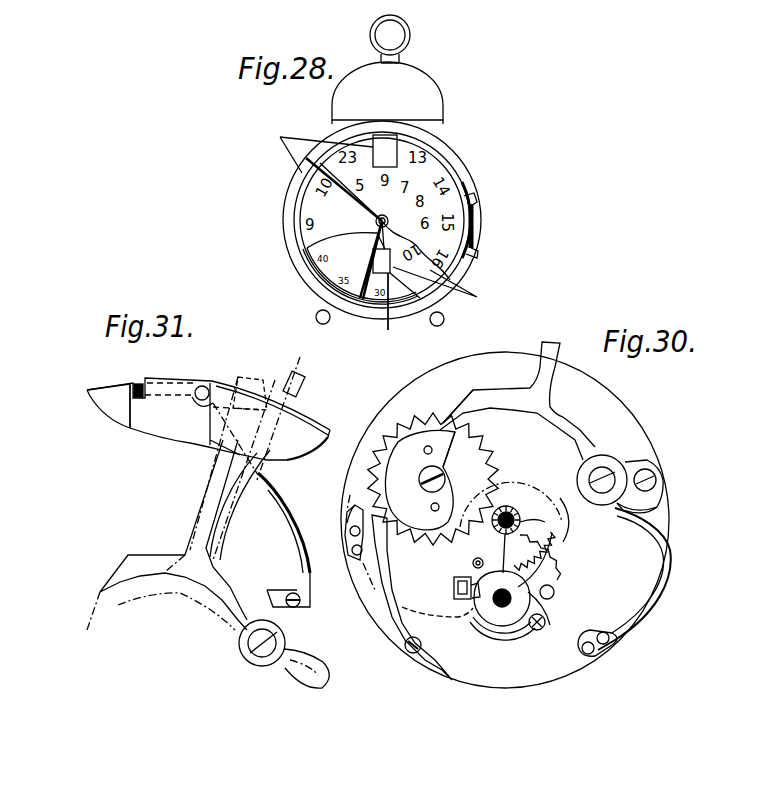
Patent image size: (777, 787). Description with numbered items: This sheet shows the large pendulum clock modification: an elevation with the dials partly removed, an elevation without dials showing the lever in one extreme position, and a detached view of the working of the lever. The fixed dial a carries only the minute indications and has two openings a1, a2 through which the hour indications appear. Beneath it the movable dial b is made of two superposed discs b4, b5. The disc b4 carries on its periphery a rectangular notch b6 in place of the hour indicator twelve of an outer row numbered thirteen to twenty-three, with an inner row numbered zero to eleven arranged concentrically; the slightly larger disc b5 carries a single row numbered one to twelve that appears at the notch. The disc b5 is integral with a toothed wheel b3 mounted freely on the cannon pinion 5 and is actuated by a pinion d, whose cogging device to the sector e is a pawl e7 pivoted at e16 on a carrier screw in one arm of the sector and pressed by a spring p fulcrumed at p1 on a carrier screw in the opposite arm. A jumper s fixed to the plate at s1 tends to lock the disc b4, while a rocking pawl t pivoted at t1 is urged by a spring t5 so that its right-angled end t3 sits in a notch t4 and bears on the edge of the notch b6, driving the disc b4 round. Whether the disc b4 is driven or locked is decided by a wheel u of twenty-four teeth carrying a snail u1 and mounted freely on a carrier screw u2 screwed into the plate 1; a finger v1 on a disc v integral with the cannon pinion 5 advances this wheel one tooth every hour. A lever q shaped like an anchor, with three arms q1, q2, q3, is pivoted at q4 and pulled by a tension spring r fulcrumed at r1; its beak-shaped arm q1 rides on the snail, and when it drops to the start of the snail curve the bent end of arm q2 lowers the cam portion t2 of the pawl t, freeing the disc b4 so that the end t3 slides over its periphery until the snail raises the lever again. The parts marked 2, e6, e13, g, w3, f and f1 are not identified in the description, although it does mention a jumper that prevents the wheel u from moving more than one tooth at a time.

In FIG. 28, the clock case 2 is at (290, 213).
In FIG. 28, the movable dial b is at (307, 203).
In FIG. 28, the disc b4 is at (430, 178).
In FIG. 31, the disc b4 is at (113, 405).
In FIG. 28, the disc b5 is at (378, 219).
In FIG. 31, the disc b5 is at (308, 423).
In FIG. 28, the rectangular notch b6 is at (397, 150).
In FIG. 31, the rectangular notch b6 is at (113, 440).
In FIG. 28, the fixed dial a is at (337, 265).
In FIG. 28, the opening a1 is at (383, 140).
In FIG. 28, the opening a2 is at (388, 330).
In FIG. 28, the jumper s is at (472, 217).
In FIG. 28, the fixing point of the jumper s1 is at (474, 243).
In FIG. 31, the rocking pawl t is at (140, 433).
In FIG. 31, the pivot of the pawl t1 is at (202, 386).
In FIG. 31, the cam portion t2 is at (262, 377).
In FIG. 31, the end bent at a right angle t3 is at (140, 382).
In FIG. 31, the notch t4 is at (112, 385).
In FIG. 31, the spring t5 is at (290, 523).
In FIG. 31, the lever q is at (223, 507).
In FIG. 30, the lever q is at (550, 352).
In FIG. 31, the arm q1 is at (127, 564).
In FIG. 30, the arm q1 is at (462, 410).
In FIG. 31, the arm q2 is at (297, 375).
In FIG. 31, the arm q3 is at (317, 680).
In FIG. 30, the arm q3 is at (657, 510).
In FIG. 31, the pivot of the lever q4 is at (250, 652).
In FIG. 30, the pivot of the lever q4 is at (607, 477).
In FIG. 30, the plate 1 is at (547, 470).
In FIG. 30, the wheel u is at (402, 430).
In FIG. 30, the snail u1 is at (435, 460).
In FIG. 30, the carrier screw u2 is at (422, 473).
In FIG. 30, the disc v is at (508, 513).
In FIG. 30, the finger v1 is at (495, 512).
In FIG. 30, the cannon pinion 5 is at (523, 522).
In FIG. 30, the sector e is at (540, 567).
In FIG. 30, the balance screw e6 is at (465, 562).
In FIG. 30, the cogging device e7 is at (522, 627).
In FIG. 30, the balance staff e13 is at (502, 607).
In FIG. 30, the pivot of the pawl e16 is at (543, 633).
In FIG. 30, the pinion d is at (523, 568).
In FIG. 30, the toothed wheel b3 is at (562, 520).
In FIG. 30, the screw g is at (554, 592).
In FIG. 30, the spring p is at (488, 628).
In FIG. 30, the fulcrum of the spring p1 is at (462, 587).
In FIG. 30, the lever arm w3 is at (387, 578).
In FIG. 30, the detent lever f is at (378, 592).
In FIG. 30, the detent lever end f1 is at (348, 523).
In FIG. 30, the tension spring r is at (657, 605).
In FIG. 30, the fulcrum of the tension spring r1 is at (590, 633).